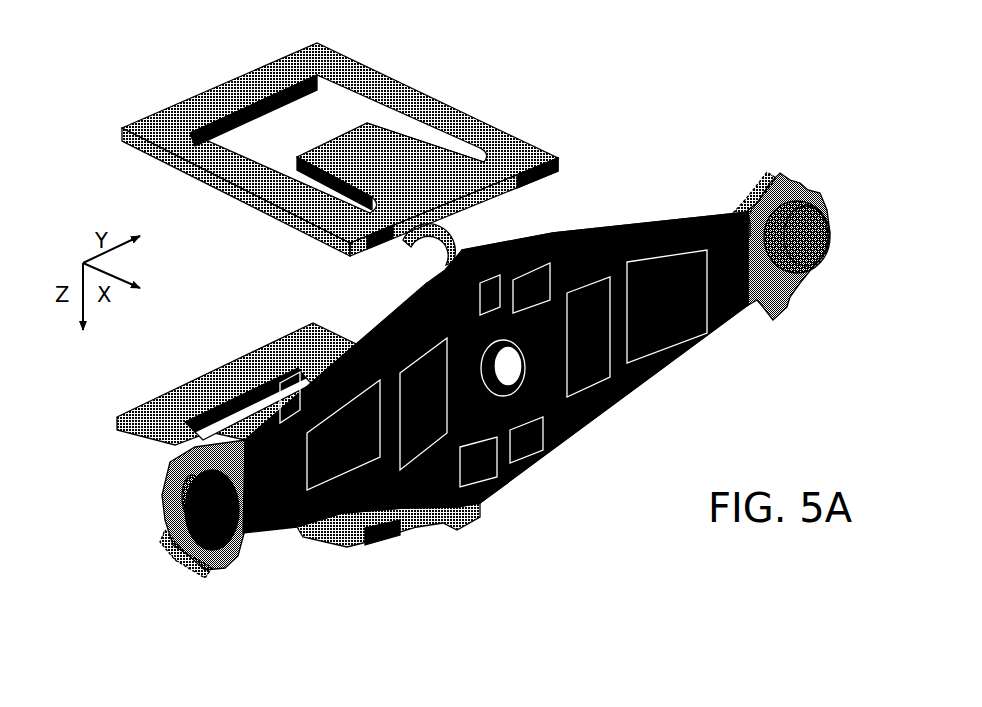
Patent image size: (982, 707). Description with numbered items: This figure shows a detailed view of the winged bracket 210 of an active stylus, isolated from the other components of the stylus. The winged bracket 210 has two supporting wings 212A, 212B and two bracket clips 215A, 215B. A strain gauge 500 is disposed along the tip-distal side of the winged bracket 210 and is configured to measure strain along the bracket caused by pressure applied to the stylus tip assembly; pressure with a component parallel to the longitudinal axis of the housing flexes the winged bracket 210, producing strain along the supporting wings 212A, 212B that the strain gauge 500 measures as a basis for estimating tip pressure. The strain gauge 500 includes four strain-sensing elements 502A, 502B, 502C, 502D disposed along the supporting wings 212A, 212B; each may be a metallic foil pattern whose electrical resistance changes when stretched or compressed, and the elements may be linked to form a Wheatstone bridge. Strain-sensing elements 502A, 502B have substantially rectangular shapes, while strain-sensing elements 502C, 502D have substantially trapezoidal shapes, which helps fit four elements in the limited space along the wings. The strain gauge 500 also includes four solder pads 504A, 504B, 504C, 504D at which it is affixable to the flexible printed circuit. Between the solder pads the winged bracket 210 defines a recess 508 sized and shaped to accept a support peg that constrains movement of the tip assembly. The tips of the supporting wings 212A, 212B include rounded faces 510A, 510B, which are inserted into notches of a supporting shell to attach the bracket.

The winged bracket 210 is at (122, 40).
The bracket clip 215A is at (128, 126).
The bracket clip 215B is at (222, 376).
The strain gauge 500 is at (340, 305).
The strain-sensing element 502A is at (587, 387).
The strain-sensing element 502B is at (433, 455).
The strain-sensing element 502C is at (677, 328).
The strain-sensing element 502D is at (333, 487).
The solder pad 504A is at (537, 452).
The solder pad 504B is at (470, 480).
The solder pad 504C is at (533, 267).
The solder pad 504D is at (463, 303).
The recess 508 is at (493, 363).
The rounded face 510A is at (830, 238).
The rounded face 510B is at (205, 478).
The supporting wing 212A is at (767, 172).
The supporting wing 212B is at (213, 570).